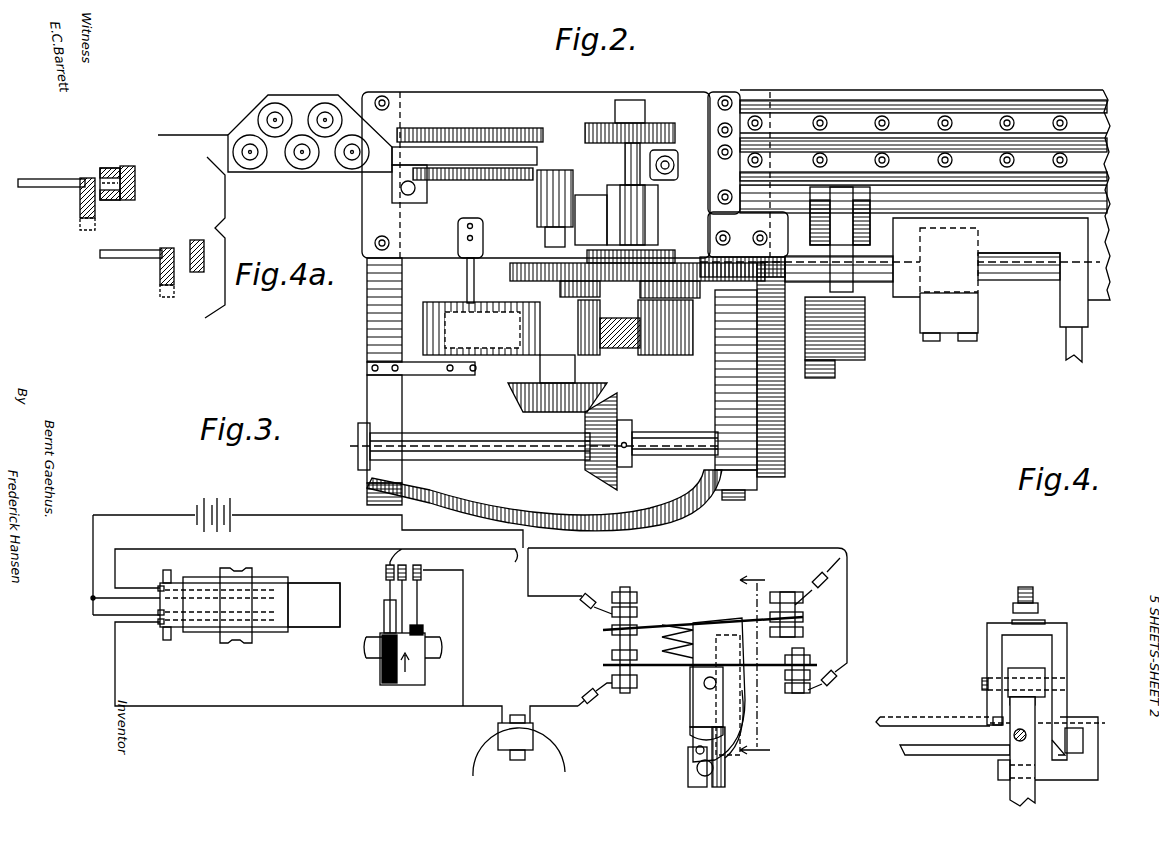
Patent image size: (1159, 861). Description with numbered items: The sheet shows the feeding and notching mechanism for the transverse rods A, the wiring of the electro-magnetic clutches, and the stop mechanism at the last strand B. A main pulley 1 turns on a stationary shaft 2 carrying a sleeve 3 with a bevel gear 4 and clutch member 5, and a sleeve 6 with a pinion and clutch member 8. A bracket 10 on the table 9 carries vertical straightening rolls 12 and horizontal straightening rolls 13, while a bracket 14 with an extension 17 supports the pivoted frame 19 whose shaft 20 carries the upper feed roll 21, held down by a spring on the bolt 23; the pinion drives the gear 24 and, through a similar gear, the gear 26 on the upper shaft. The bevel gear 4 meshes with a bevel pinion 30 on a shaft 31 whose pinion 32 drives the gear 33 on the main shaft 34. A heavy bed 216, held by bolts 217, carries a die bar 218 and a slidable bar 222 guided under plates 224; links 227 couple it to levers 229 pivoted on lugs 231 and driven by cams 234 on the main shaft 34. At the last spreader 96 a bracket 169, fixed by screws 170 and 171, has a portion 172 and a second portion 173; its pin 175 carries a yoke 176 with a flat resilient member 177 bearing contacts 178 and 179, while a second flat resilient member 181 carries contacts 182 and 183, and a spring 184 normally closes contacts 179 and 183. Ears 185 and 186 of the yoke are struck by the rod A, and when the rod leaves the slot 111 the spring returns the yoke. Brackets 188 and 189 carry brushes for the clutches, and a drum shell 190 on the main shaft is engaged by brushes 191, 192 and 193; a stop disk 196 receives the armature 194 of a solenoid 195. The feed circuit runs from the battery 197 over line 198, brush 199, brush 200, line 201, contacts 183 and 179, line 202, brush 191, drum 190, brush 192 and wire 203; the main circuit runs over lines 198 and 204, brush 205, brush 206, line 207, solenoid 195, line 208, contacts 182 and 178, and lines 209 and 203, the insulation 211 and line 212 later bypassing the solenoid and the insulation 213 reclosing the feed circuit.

In FIG. 2, the main pulley 1 is at (660, 356).
In FIG. 3, the main pulley 1 is at (250, 605).
In FIG. 2, the stationary shaft 2 is at (540, 421).
In FIG. 2, the sleeve 3 is at (585, 357).
In FIG. 2, the bevel gear 4 is at (508, 392).
In FIG. 2, the clutch member 5 is at (528, 356).
In FIG. 3, the clutch member 5 is at (275, 632).
In FIG. 2, the sleeve 6 is at (535, 283).
In FIG. 2, the clutch member 8 is at (580, 288).
In FIG. 3, the clutch member 8 is at (282, 582).
In FIG. 2, the table 9 is at (542, 311).
In FIG. 2, the bracket 10 is at (456, 175).
In FIG. 2, the vertical straightening rolls 12 is at (297, 168).
In FIG. 2, the horizontal straightening rolls 13 is at (490, 128).
In FIG. 2, the bracket 14 is at (660, 200).
In FIG. 2, the extension 17 is at (552, 203).
In FIG. 2, the frame 19 is at (591, 218).
In FIG. 2, the shaft 20 is at (622, 206).
In FIG. 2, the upper feed roll 21 is at (606, 124).
In FIG. 2, the bolt 23 is at (675, 165).
In FIG. 2, the gear 24 is at (670, 293).
In FIG. 2, the gear 26 is at (676, 252).
In FIG. 2, the bevel pinion 30 is at (617, 412).
In FIG. 2, the shaft 31 is at (668, 440).
In FIG. 2, the pinion 32 is at (785, 440).
In FIG. 2, the gear 33 is at (778, 378).
In FIG. 2, the main shaft 34 is at (1020, 283).
In FIG. 3, the main shaft 34 is at (366, 652).
In FIG. 4A, the spreader 96 is at (108, 168).
In FIG. 3, the spreader 96 is at (725, 780).
In FIG. 4, the spreader 96 is at (1020, 790).
In FIG. 3, the slot 111 is at (700, 745).
In FIG. 3, the bracket 169 is at (690, 692).
In FIG. 4, the bracket 169 is at (1030, 688).
In FIG. 4, the screw 170 is at (1045, 706).
In FIG. 3, the screw 171 is at (698, 773).
In FIG. 4, the screw 171 is at (998, 772).
In FIG. 4A, the portion 172 is at (135, 175).
In FIG. 4, the portion 172 is at (1057, 747).
In FIG. 4A, the second portion 173 is at (196, 272).
In FIG. 4, the second portion 173 is at (1050, 770).
In FIG. 3, the pin 175 is at (703, 683).
In FIG. 4, the pin 175 is at (982, 686).
In FIG. 3, the yoke 176 is at (731, 669).
In FIG. 4, the yoke 176 is at (990, 658).
In FIG. 3, the flat resilient member 177 is at (678, 620).
In FIG. 3, the insulated contact 178 is at (612, 645).
In FIG. 3, the insulated contact 179 is at (795, 636).
In FIG. 3, the second flat resilient member 181 is at (612, 666).
In FIG. 3, the insulated contact 182 is at (620, 650).
In FIG. 3, the insulated contact 183 is at (800, 656).
In FIG. 3, the spring 184 is at (662, 646).
In FIG. 2, the depending ear 185 is at (367, 312).
In FIG. 4A, the depending ear 185 is at (95, 212).
In FIG. 3, the depending ear 185 is at (725, 723).
In FIG. 4, the depending ear 185 is at (1000, 716).
In FIG. 4A, the depending ear 186 is at (160, 275).
In FIG. 3, the depending ear 186 is at (740, 748).
In FIG. 4, the depending ear 186 is at (1052, 755).
In FIG. 2, the bracket 188 is at (466, 270).
In FIG. 3, the bracket 188 is at (167, 570).
In FIG. 2, the bracket 189 is at (440, 375).
In FIG. 3, the bracket 189 is at (167, 640).
In FIG. 3, the drum shell 190 is at (427, 681).
In FIG. 3, the brush 191 is at (390, 607).
In FIG. 3, the brush 192 is at (404, 604).
In FIG. 3, the brush 193 is at (420, 605).
In FIG. 3, the armature 194 is at (516, 760).
In FIG. 3, the solenoid 195 is at (498, 740).
In FIG. 2, the stop disk 196 is at (1066, 348).
In FIG. 3, the stop disk 196 is at (560, 772).
In FIG. 3, the battery 197 is at (212, 503).
In FIG. 3, the line 198 is at (93, 538).
In FIG. 3, the brush 199 is at (150, 600).
In FIG. 3, the brush 200 is at (158, 587).
In FIG. 3, the line 201 is at (262, 546).
In FIG. 3, the line 202 is at (687, 619).
In FIG. 3, the wire 203 is at (377, 529).
In FIG. 3, the line 204 is at (119, 612).
In FIG. 3, the brush 205 is at (158, 616).
In FIG. 3, the brush 206 is at (158, 624).
In FIG. 3, the line 207 is at (222, 706).
In FIG. 3, the line 208 is at (575, 705).
In FIG. 3, the line 209 is at (528, 580).
In FIG. 3, the insulation 211 is at (424, 630).
In FIG. 3, the line 212 is at (463, 658).
In FIG. 3, the insulation 213 is at (384, 680).
In FIG. 2, the bed 216 is at (925, 194).
In FIG. 2, the bolt 217 is at (730, 242).
In FIG. 2, the die bar 218 is at (923, 134).
In FIG. 2, the bar 222 is at (923, 183).
In FIG. 2, the plate 224 is at (718, 172).
In FIG. 2, the link 227 is at (838, 222).
In FIG. 2, the lever 229 is at (848, 322).
In FIG. 2, the lug 231 is at (885, 262).
In FIG. 2, the cam 234 is at (820, 378).
In FIG. 2, the transverse rod A is at (195, 135).
In FIG. 4A, the transverse rod A is at (58, 186).
In FIG. 3, the transverse rod A is at (690, 755).
In FIG. 4, the transverse rod A is at (918, 755).
In FIG. 4, the strand B is at (1013, 736).